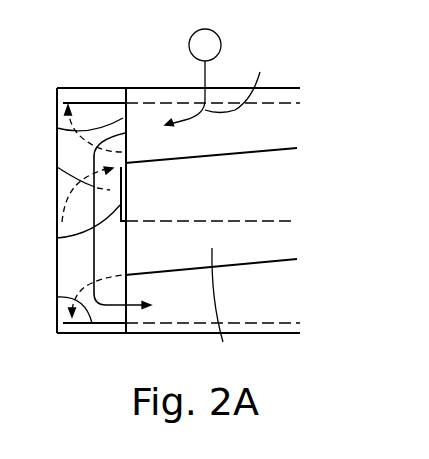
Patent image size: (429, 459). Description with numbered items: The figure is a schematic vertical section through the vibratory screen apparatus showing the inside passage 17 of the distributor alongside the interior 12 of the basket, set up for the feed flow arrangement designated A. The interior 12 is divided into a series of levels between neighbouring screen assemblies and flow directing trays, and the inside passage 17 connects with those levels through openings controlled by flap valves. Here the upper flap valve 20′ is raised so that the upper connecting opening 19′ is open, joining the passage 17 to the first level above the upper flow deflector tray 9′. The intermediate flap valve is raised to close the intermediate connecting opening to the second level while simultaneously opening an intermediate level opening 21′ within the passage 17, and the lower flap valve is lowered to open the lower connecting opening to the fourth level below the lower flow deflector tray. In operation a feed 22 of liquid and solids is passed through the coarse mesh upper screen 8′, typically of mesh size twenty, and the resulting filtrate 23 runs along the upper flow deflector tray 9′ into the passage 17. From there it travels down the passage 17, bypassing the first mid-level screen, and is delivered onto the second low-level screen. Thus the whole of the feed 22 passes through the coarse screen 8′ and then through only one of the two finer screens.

The inside passage 17 is at (89, 112).
The upper flap valve 20′ is at (103, 105).
The feed 22 is at (205, 80).
The filtrate 23 is at (243, 80).
The upper screen 8′ is at (272, 100).
The upper flow deflector tray 9′ is at (283, 150).
The interior 12 is at (226, 306).
The upper connecting opening 19′ is at (57, 128).
The intermediate level opening 21′ is at (57, 203).
The feed flow arrangement A is at (193, 77).